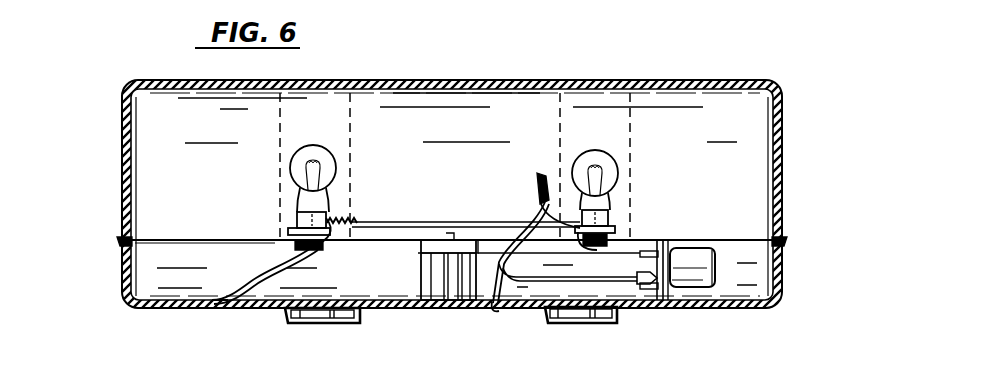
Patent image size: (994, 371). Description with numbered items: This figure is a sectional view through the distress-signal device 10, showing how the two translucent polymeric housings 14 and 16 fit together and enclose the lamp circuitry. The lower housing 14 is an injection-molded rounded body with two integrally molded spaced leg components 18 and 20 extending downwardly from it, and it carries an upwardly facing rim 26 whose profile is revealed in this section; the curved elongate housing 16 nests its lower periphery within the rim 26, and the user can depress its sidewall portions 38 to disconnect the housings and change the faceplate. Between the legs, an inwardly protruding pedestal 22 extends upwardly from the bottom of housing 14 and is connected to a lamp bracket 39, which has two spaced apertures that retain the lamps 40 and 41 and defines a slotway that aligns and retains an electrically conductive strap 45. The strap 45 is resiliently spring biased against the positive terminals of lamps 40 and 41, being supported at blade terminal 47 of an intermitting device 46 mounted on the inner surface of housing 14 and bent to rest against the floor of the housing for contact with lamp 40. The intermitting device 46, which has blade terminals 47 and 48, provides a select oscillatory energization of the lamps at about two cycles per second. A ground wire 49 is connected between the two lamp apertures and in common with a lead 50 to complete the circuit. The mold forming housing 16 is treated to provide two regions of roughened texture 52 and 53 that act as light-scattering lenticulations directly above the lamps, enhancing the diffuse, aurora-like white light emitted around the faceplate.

The device 10 is at (778, 12).
The housing 14 is at (784, 286).
The housing 16 is at (784, 135).
The leg component 18 is at (612, 324).
The leg component 20 is at (357, 324).
The pedestal 22 is at (420, 271).
The rim 26 is at (118, 240).
The sidewall portions 38 is at (123, 192).
The lamp bracket 39 is at (414, 242).
The lamp 40 is at (336, 166).
The lamp 41 is at (618, 161).
The electrically conductive strap 45 is at (265, 274).
The intermitting device 46 is at (693, 260).
The blade terminal 47 is at (652, 243).
The blade terminal 48 is at (645, 281).
The ground wire 49 is at (375, 222).
The lead 50 is at (536, 217).
The region of roughened texture 52 is at (640, 113).
The region of roughened texture 53 is at (380, 90).